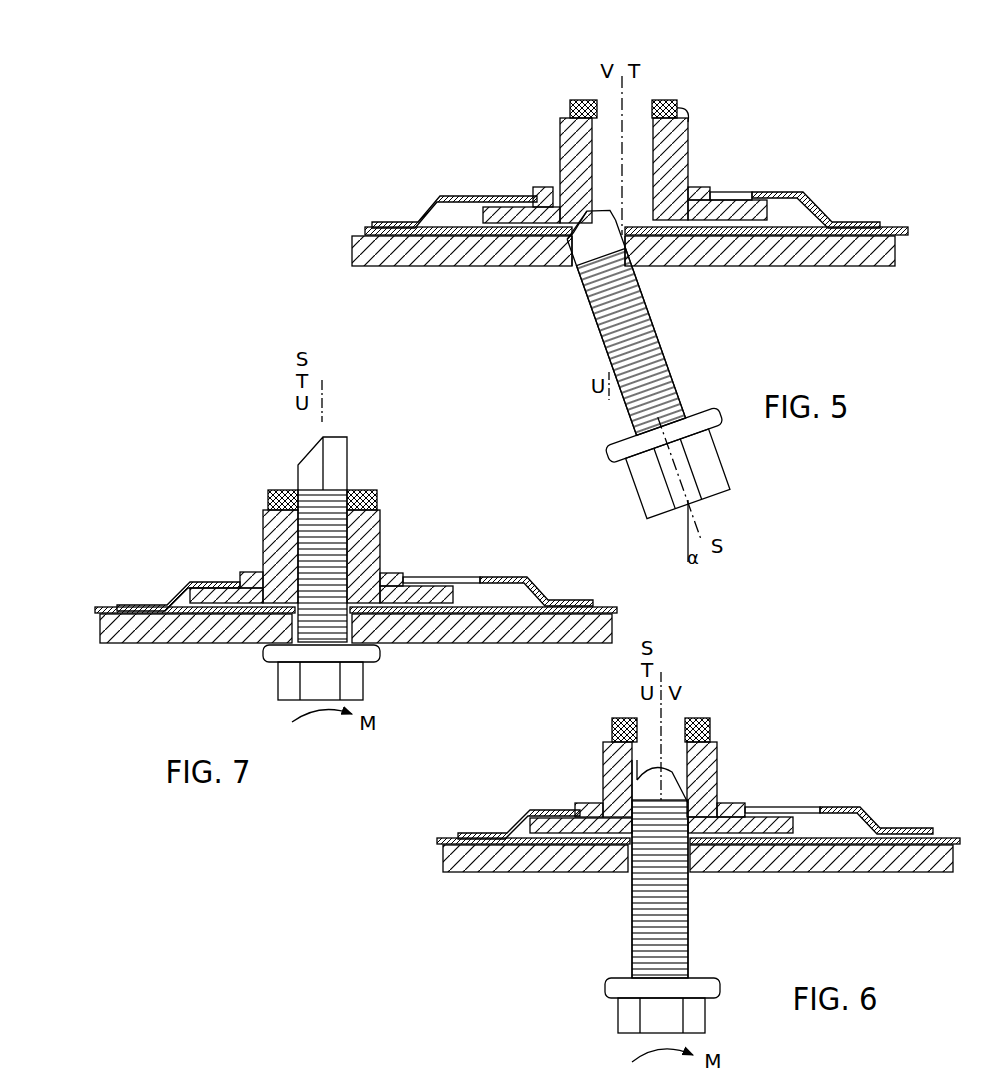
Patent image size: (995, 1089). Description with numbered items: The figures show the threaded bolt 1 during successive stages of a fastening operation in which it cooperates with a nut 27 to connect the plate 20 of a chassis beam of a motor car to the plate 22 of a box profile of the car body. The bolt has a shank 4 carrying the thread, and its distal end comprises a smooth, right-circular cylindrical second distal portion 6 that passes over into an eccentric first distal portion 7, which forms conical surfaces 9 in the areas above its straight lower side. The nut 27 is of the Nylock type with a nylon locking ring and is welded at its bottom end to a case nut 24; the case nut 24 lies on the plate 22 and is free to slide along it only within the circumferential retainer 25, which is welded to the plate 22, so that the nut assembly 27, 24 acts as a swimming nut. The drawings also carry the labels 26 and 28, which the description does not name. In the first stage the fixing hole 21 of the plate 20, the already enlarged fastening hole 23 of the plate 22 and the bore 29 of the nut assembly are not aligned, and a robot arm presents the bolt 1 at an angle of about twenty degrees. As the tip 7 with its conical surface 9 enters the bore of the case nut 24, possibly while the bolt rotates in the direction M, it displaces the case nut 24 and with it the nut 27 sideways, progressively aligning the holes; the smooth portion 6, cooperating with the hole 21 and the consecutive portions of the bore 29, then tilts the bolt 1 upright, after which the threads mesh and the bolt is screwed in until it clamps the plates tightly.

In FIG. 5, the threaded bolt 1 is at (660, 377).
In FIG. 7, the threaded bolt 1 is at (274, 683).
In FIG. 6, the threaded bolt 1 is at (616, 943).
In FIG. 5, the shank 4 is at (668, 356).
In FIG. 7, the shank 4 is at (306, 539).
In FIG. 6, the shank 4 is at (690, 919).
In FIG. 5, the second distal portion 6 is at (586, 266).
In FIG. 7, the second distal portion 6 is at (308, 473).
In FIG. 6, the second distal portion 6 is at (655, 800).
In FIG. 5, the first distal portion 7 is at (571, 258).
In FIG. 5, the conical surfaces 9 is at (550, 188).
In FIG. 5, the plate 20 is at (848, 256).
In FIG. 7, the plate 20 is at (530, 634).
In FIG. 6, the plate 20 is at (900, 856).
In FIG. 5, the fixing hole 21 is at (646, 246).
In FIG. 5, the plate 22 is at (890, 228).
In FIG. 5, the fastening hole 23 is at (702, 192).
In FIG. 5, the case nut 24 is at (755, 198).
In FIG. 7, the case nut 24 is at (440, 603).
In FIG. 6, the case nut 24 is at (790, 836).
In FIG. 5, the circumferential retainer 25 is at (820, 212).
In FIG. 5, the stamped bracket 26 is at (512, 196).
In FIG. 7, the stamped bracket 26 is at (436, 580).
In FIG. 6, the stamped bracket 26 is at (788, 807).
In FIG. 5, the nut 27 is at (690, 160).
In FIG. 7, the nut 27 is at (383, 536).
In FIG. 6, the nut 27 is at (718, 748).
In FIG. 5, the sealing ring 28 is at (675, 100).
In FIG. 7, the sealing ring 28 is at (362, 490).
In FIG. 5, the bore 29 is at (690, 122).
In FIG. 6, the bore 29 is at (615, 753).